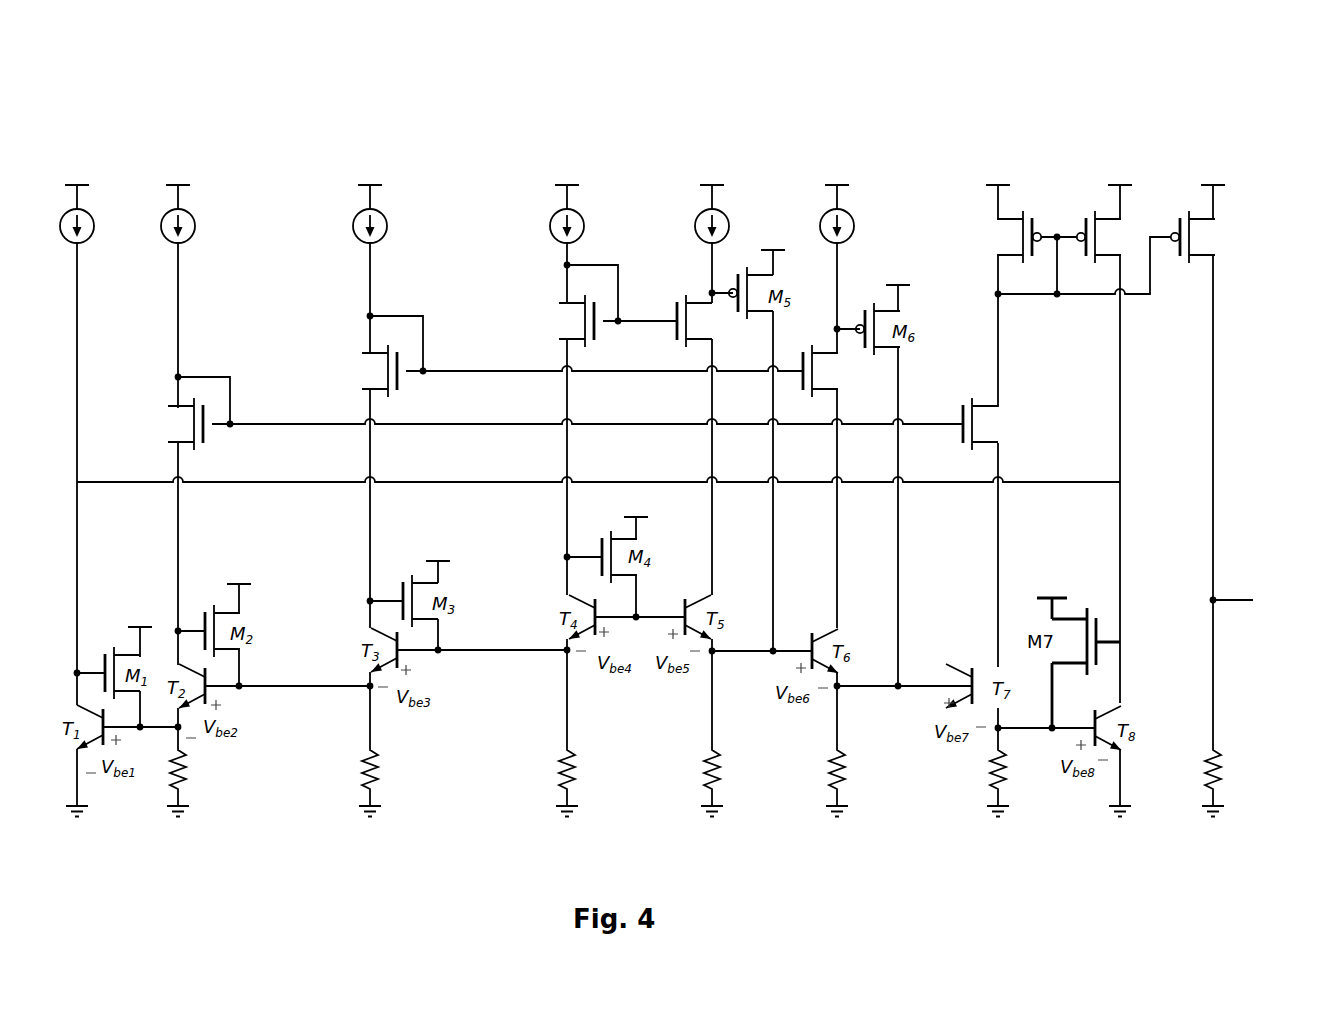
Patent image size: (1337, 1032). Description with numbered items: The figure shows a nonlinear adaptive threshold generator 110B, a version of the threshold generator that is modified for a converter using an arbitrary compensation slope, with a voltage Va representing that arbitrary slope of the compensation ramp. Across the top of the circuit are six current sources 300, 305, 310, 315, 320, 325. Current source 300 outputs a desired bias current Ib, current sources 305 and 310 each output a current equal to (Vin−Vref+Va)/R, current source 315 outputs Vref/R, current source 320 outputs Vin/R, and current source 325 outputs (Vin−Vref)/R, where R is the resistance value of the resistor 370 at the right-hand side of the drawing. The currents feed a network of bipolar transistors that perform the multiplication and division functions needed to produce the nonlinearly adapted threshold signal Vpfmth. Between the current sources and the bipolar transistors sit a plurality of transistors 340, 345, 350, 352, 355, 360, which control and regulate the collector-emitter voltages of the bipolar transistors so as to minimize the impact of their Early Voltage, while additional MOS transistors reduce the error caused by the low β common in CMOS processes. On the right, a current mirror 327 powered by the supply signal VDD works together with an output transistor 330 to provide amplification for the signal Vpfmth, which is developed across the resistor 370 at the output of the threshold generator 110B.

The nonlinear adaptive threshold generator 110B is at (828, 76).
The current source 300 is at (98, 205).
The current source 305 is at (208, 215).
The current source 310 is at (400, 195).
The current source 315 is at (555, 180).
The current source 320 is at (740, 188).
The current source 325 is at (887, 180).
The current mirror 327 is at (1074, 208).
The output transistor 330 is at (1222, 240).
The transistor 340 is at (196, 430).
The transistor 345 is at (363, 368).
The transistor 350 is at (563, 333).
The transistor 352 is at (697, 323).
The transistor 355 is at (820, 370).
The transistor 360 is at (997, 420).
The resistor 370 is at (1233, 738).